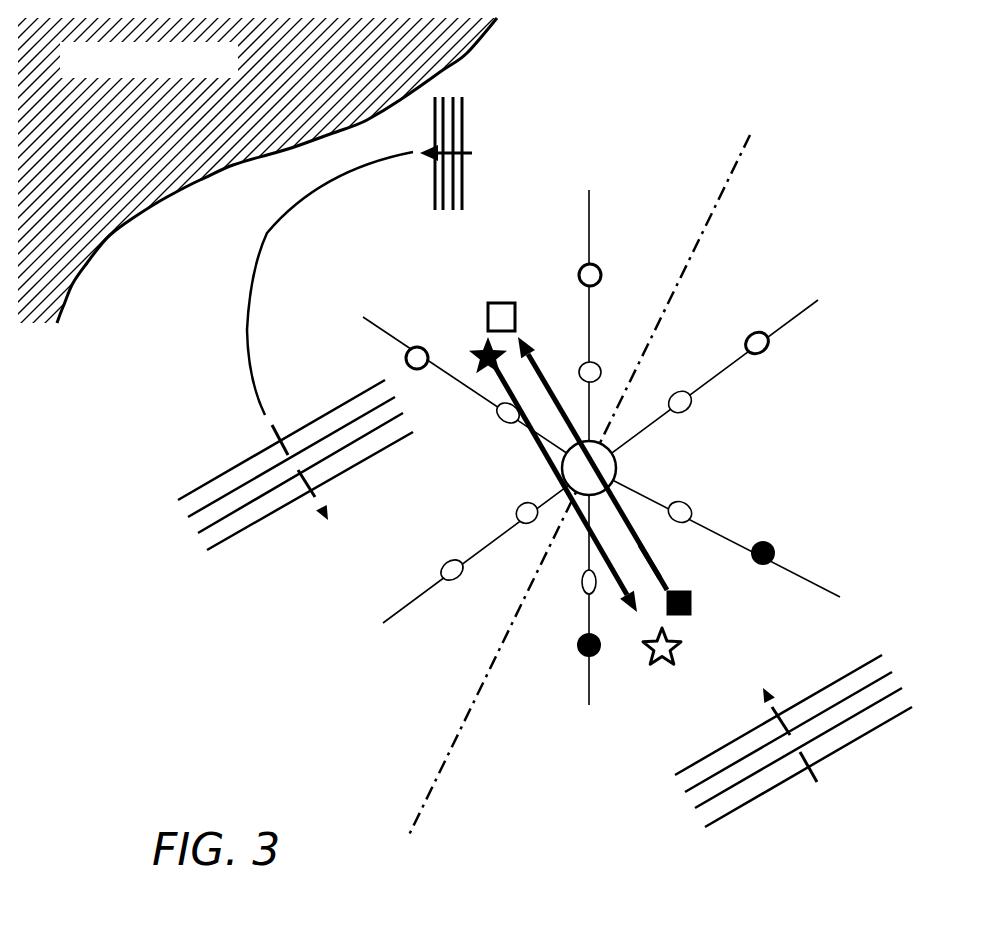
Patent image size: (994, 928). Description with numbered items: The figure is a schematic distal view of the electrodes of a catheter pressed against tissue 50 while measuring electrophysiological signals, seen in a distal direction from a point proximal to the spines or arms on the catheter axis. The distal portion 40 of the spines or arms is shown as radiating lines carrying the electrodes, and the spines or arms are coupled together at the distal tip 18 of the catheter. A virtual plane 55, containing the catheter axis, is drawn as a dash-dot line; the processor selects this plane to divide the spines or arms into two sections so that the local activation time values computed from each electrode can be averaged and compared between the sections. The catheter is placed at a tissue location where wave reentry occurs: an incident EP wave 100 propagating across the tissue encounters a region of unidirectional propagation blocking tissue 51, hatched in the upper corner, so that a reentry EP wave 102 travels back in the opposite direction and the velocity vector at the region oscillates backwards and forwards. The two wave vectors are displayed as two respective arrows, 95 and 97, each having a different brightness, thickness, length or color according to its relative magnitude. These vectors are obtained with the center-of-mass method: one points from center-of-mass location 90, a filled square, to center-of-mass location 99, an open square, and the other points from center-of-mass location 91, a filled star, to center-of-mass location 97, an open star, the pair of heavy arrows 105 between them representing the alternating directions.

The blocking tissue 51 is at (257, 170).
The reentry EP wave 102 is at (295, 323).
The EP wave 100 is at (801, 753).
The tissue 50 is at (400, 683).
The virtual plane 55 is at (708, 218).
The distal portion 40 is at (840, 427).
The distal tip 18 is at (589, 468).
The ablation path arrows 105 is at (553, 457).
The arrow 95 is at (655, 568).
The center-of-mass location 90 is at (692, 605).
The center-of-mass location 99 is at (505, 302).
The center-of-mass location 91 is at (473, 350).
The center-of-mass location 97 is at (673, 665).